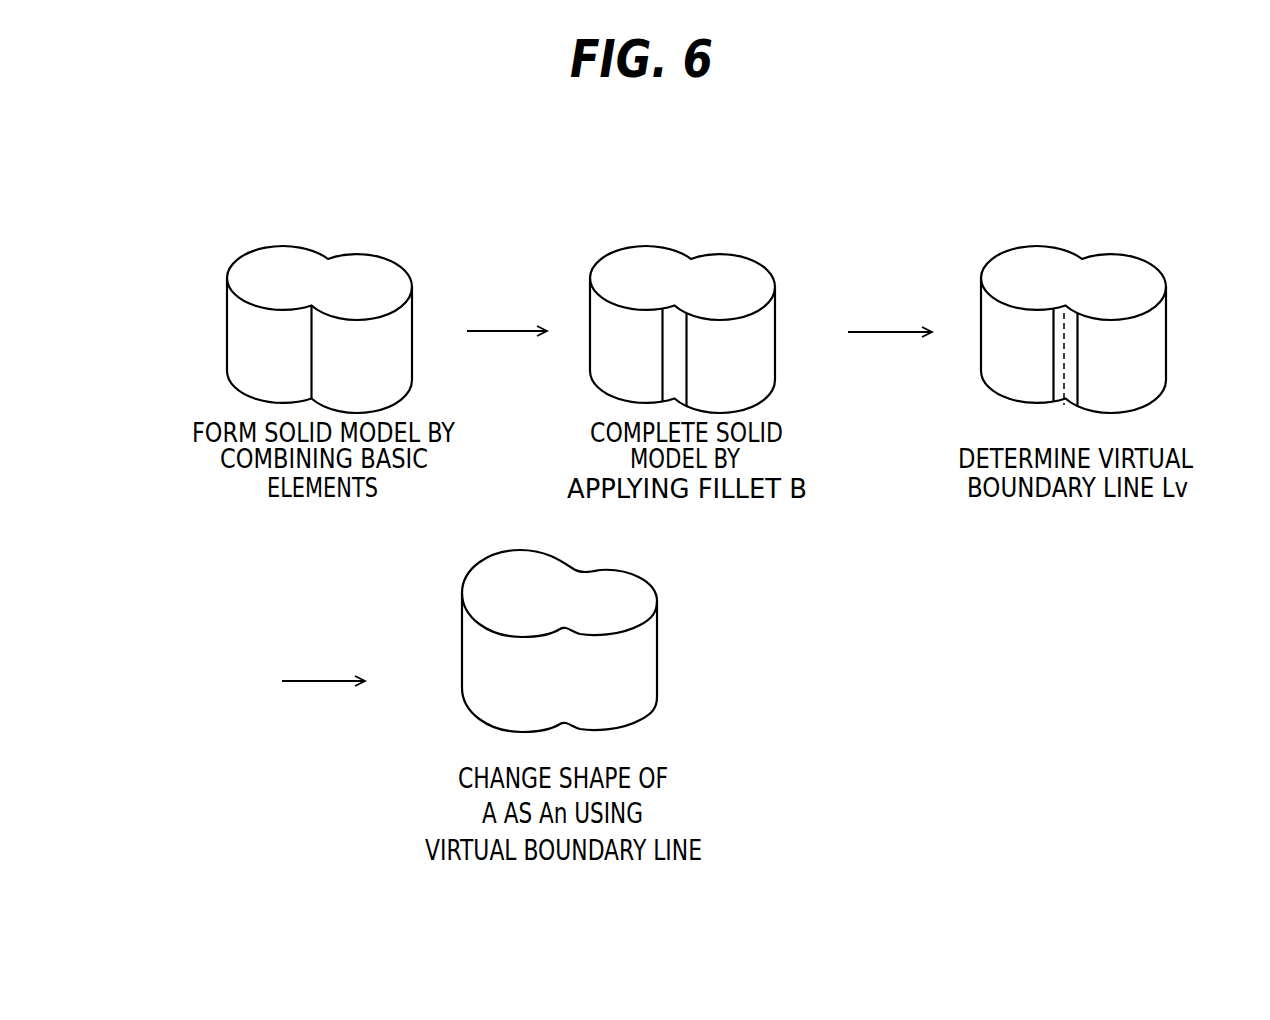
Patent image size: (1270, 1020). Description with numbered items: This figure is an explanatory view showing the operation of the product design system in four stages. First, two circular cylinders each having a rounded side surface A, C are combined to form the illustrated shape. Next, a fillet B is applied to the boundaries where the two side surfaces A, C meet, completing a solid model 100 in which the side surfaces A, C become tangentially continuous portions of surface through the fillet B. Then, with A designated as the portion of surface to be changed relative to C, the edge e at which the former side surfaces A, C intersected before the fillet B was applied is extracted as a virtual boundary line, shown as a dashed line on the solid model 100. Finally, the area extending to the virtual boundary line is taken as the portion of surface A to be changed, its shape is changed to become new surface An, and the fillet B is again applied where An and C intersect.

The solid model 100 is at (403, 252).
The side surface A is at (238, 352).
The fillet B is at (664, 318).
The side surface C is at (397, 346).
The edge e is at (1064, 352).
The new A An is at (475, 658).